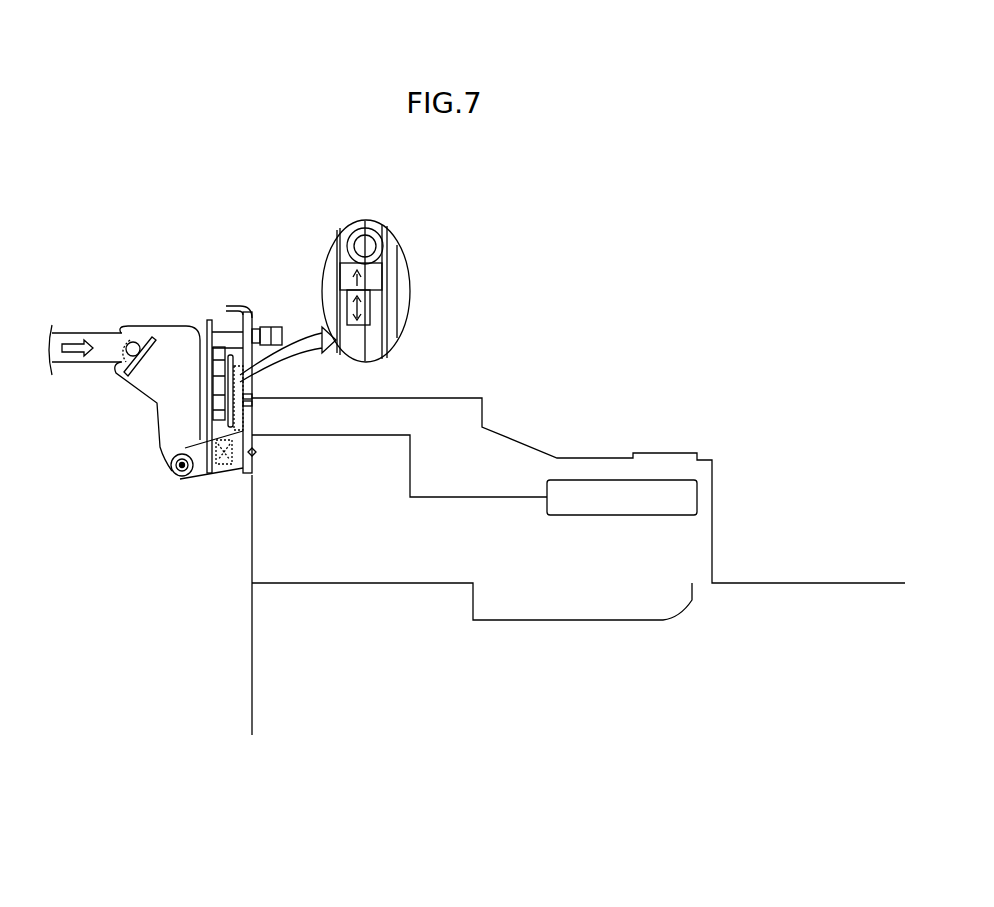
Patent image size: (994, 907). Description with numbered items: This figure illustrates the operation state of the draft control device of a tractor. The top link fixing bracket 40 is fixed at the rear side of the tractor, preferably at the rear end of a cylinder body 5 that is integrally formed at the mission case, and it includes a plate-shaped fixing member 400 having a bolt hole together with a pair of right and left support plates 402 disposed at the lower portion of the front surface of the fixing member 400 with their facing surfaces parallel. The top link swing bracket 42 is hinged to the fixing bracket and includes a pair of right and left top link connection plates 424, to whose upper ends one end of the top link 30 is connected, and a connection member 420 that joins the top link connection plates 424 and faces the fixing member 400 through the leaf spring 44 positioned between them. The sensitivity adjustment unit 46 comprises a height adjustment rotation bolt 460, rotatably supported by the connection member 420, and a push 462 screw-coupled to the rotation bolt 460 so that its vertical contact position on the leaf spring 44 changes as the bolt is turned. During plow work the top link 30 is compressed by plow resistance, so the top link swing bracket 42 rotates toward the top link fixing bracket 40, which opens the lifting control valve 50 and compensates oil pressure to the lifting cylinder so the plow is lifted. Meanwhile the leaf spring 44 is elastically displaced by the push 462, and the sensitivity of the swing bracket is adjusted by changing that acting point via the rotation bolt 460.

The top link 30 is at (74, 332).
The top link swing bracket 42 is at (155, 402).
The connection member 420 is at (200, 405).
The top link connection plates 424 is at (190, 431).
The support plates 402 is at (206, 472).
The fixing member 400 is at (247, 468).
The top link fixing bracket 40 is at (170, 528).
The sensitivity adjustment unit 46 is at (413, 251).
The height adjustment rotation bolt 460 is at (383, 228).
The push 462 is at (383, 262).
The leaf spring 44 is at (394, 318).
The lifting control valve 50 is at (617, 479).
The cylinder body 5 is at (677, 453).